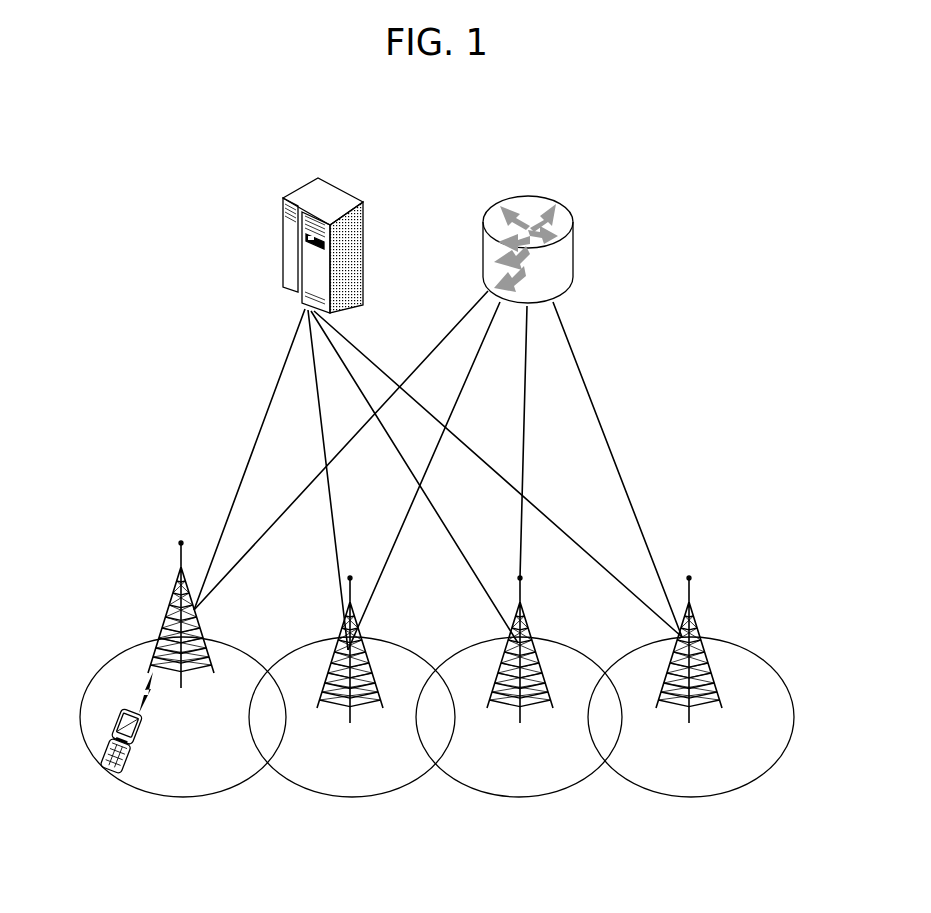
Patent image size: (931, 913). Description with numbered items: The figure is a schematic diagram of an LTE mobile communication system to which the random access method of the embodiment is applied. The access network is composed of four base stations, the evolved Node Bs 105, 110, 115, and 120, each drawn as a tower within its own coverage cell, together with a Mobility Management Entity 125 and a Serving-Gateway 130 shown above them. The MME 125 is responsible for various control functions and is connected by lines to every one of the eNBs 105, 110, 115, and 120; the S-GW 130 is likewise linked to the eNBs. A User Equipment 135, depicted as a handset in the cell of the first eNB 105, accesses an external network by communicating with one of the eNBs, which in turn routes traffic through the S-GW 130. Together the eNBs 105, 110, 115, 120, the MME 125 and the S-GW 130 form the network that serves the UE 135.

The base station (eNB) 105 is at (168, 592).
The base station (eNB) 110 is at (345, 622).
The base station (eNB) 115 is at (527, 613).
The base station (eNB) 120 is at (695, 613).
The Mobility Management Entity (MME) 125 is at (308, 196).
The Serving-Gateway (S-GW) 130 is at (527, 203).
The User Equipment (UE) 135 is at (141, 742).